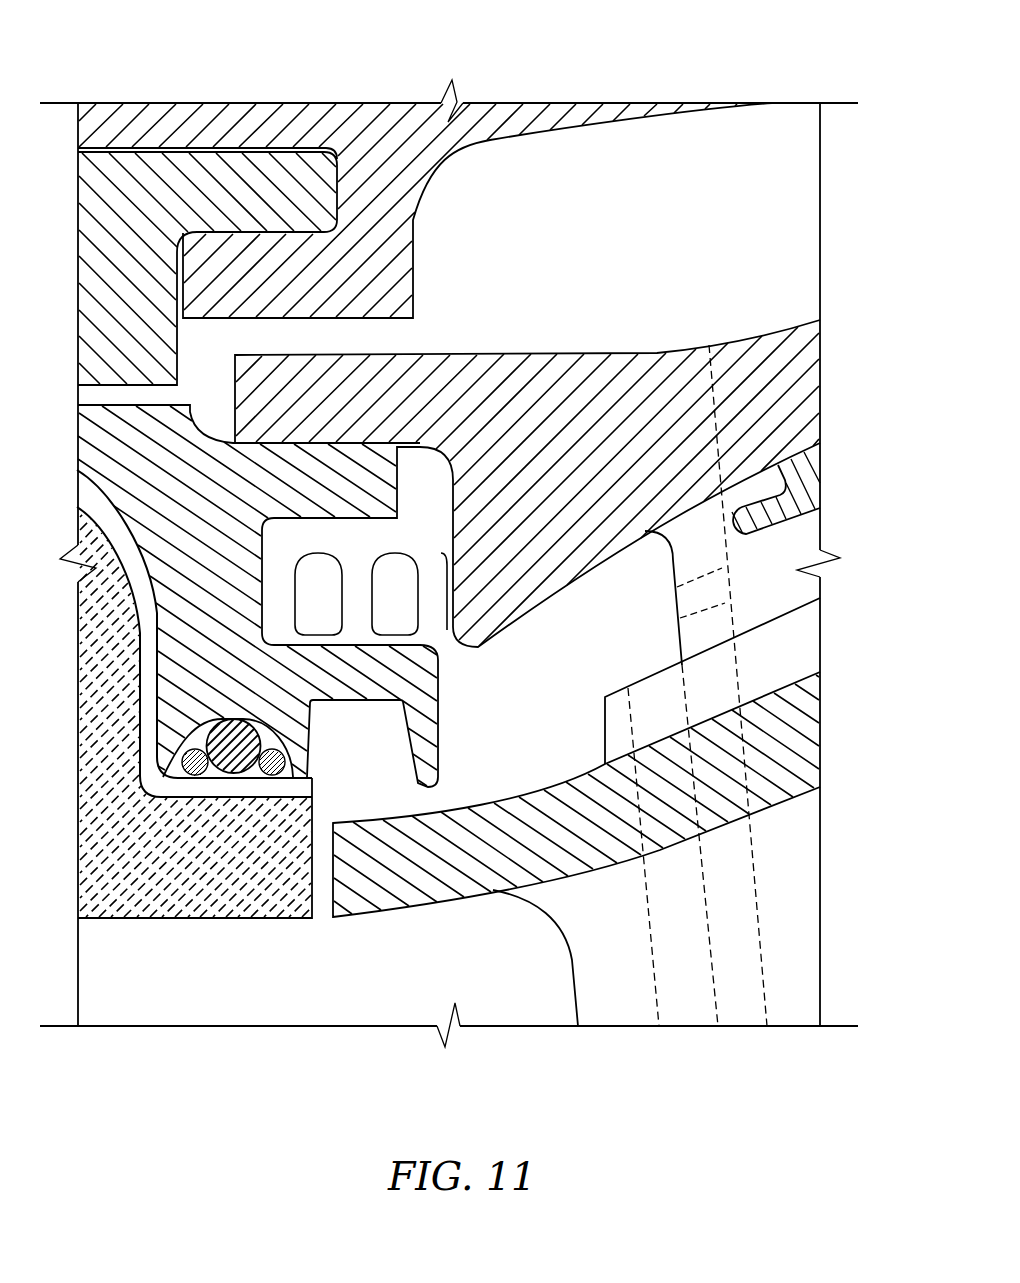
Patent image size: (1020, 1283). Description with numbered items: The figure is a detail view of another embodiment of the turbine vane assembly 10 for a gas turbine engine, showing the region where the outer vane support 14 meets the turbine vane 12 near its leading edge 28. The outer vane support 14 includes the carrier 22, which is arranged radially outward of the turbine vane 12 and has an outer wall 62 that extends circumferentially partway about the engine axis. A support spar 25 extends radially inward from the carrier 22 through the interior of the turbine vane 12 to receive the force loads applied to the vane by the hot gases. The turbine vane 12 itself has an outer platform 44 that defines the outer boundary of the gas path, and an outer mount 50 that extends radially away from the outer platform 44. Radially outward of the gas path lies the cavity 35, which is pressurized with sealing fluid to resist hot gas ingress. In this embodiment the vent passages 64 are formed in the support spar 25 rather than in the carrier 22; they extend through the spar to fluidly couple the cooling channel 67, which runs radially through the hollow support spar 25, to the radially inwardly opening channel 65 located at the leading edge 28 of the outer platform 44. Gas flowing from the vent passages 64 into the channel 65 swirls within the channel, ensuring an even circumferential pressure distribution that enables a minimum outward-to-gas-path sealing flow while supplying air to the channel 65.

The turbine vane assembly 10 is at (596, 138).
The carrier 22 is at (687, 182).
The outer vane support 14 is at (733, 148).
The outer wall 62 is at (793, 326).
The radially outward cavity 35 is at (711, 254).
The cooling channel 67 is at (710, 410).
The outer mount 50 is at (605, 730).
The support spar 25 is at (672, 560).
The vent passages 64 is at (700, 612).
The radially inwardly opening channel 65 is at (511, 739).
The leading edge 28 is at (330, 888).
The outer platform 44 is at (343, 927).
The turbine vane 12 is at (503, 982).